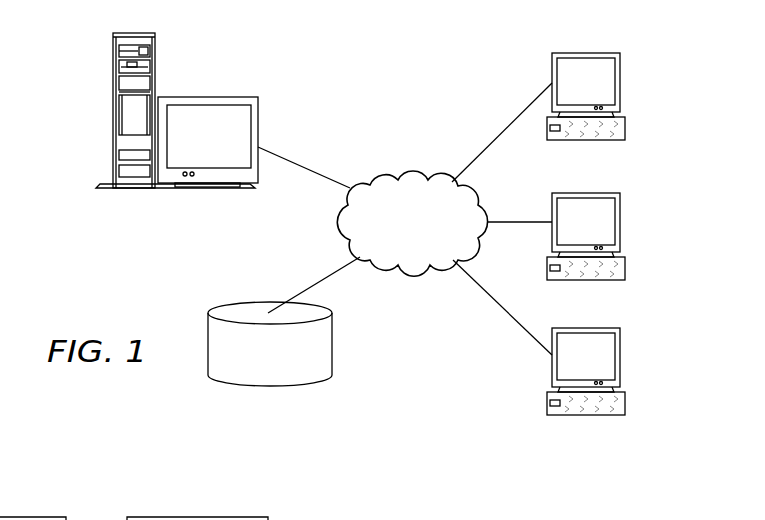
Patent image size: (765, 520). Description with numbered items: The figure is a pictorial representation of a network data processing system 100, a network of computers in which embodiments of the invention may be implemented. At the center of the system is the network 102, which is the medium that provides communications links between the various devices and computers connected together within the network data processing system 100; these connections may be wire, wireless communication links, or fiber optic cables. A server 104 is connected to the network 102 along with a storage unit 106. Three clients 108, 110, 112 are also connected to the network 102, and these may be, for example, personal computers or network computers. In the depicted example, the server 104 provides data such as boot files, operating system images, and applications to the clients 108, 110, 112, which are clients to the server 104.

The network data processing system 100 is at (460, 63).
The network 102 is at (385, 173).
The server 104 is at (112, 112).
The storage unit 106 is at (252, 385).
The client 108 is at (622, 82).
The client 110 is at (622, 222).
The client 112 is at (622, 357).